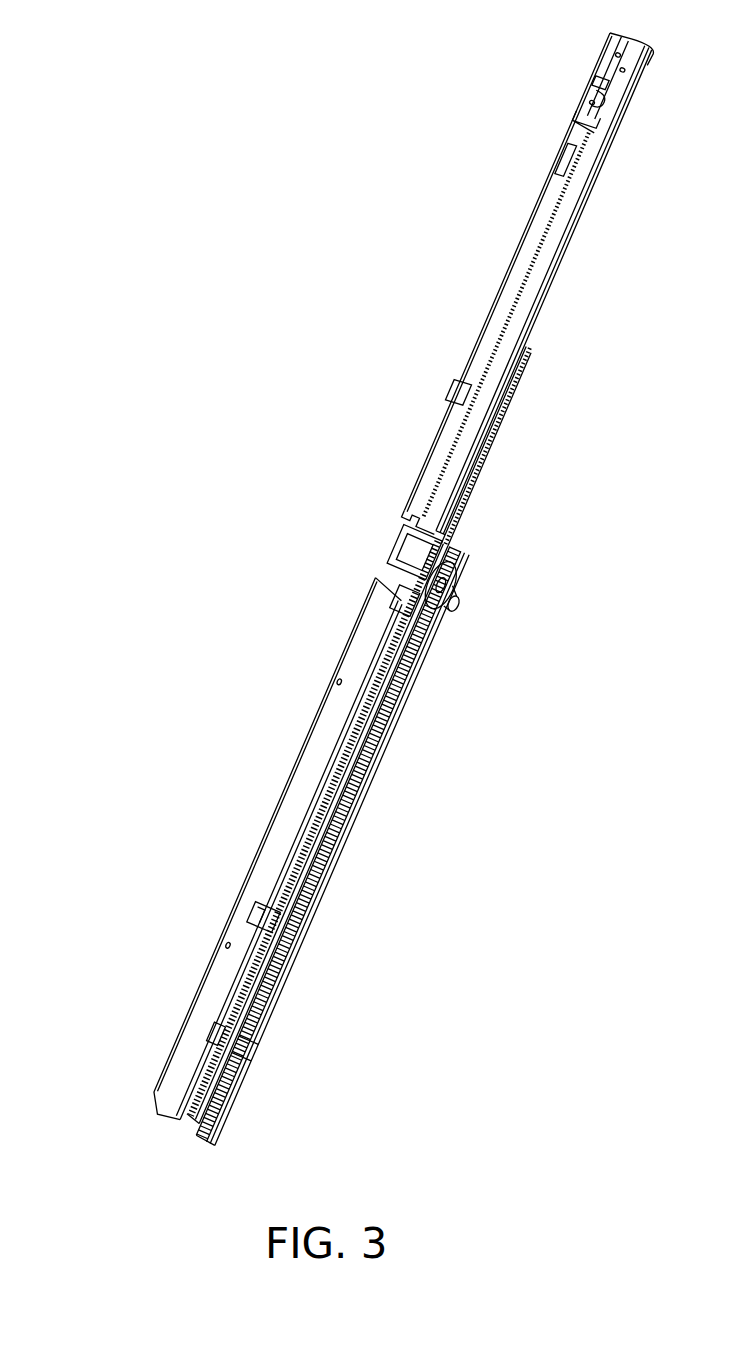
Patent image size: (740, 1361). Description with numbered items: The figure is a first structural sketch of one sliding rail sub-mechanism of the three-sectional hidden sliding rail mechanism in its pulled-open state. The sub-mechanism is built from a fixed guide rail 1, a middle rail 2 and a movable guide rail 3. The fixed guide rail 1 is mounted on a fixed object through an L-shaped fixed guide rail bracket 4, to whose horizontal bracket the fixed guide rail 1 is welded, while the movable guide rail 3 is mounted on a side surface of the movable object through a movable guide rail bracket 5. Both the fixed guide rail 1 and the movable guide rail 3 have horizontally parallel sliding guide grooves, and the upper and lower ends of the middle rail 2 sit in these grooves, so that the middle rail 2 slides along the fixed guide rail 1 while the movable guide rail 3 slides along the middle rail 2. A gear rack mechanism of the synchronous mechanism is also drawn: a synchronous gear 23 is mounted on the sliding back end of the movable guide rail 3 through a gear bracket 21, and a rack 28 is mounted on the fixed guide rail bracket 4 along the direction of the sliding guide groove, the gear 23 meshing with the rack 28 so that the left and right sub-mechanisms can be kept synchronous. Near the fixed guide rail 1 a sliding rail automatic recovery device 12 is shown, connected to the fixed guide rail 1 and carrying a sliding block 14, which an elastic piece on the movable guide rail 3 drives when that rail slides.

The fixed guide rail 1 is at (288, 984).
The middle rail 2 is at (332, 826).
The movable guide rail 3 is at (410, 550).
The fixed guide rail bracket 4 is at (301, 727).
The movable guide rail bracket 5 is at (495, 305).
The sliding rail automatic recovery device 12 is at (243, 1033).
The sliding block 14 is at (255, 947).
The gear bracket 21 is at (396, 594).
The synchronous gear 23 is at (456, 566).
The rack 28 is at (258, 1049).